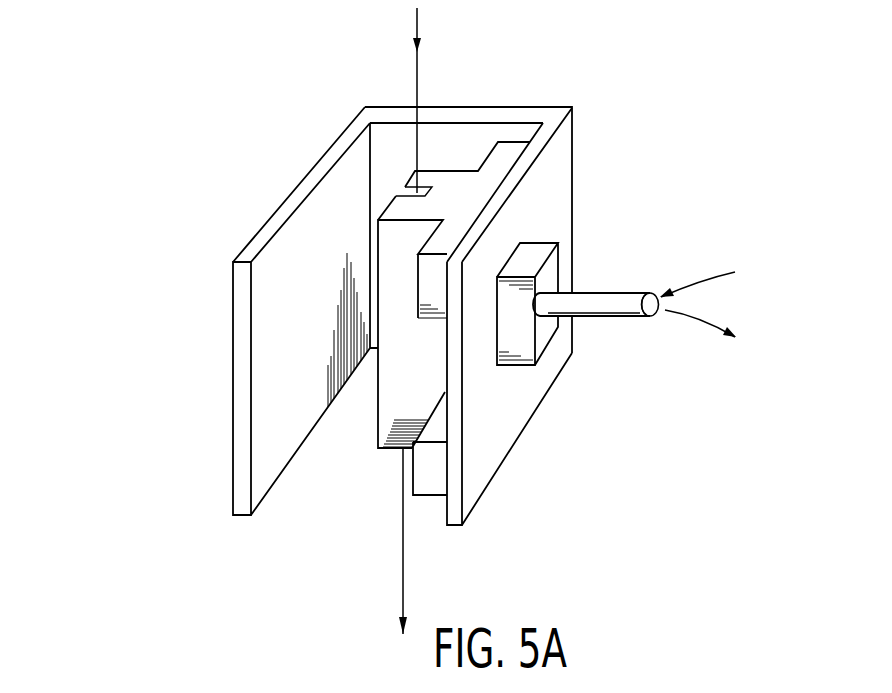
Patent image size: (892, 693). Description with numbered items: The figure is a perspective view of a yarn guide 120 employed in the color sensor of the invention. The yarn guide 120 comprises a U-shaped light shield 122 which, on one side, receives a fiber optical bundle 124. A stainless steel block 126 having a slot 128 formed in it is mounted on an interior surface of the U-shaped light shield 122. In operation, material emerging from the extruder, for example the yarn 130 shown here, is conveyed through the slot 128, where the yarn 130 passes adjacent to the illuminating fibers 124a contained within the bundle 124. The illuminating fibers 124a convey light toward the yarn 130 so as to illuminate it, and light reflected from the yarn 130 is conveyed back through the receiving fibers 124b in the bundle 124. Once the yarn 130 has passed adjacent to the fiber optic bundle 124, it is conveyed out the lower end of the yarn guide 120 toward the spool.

The yarn guide 120 is at (222, 188).
The U-shaped light shield 122 is at (240, 405).
The fiber optical bundle 124 is at (596, 306).
The illuminating fibers 124a is at (693, 290).
The receiving fibers 124b is at (698, 308).
The stainless steel block 126 is at (508, 155).
The slot 128 is at (405, 188).
The yarn 130 is at (417, 75).